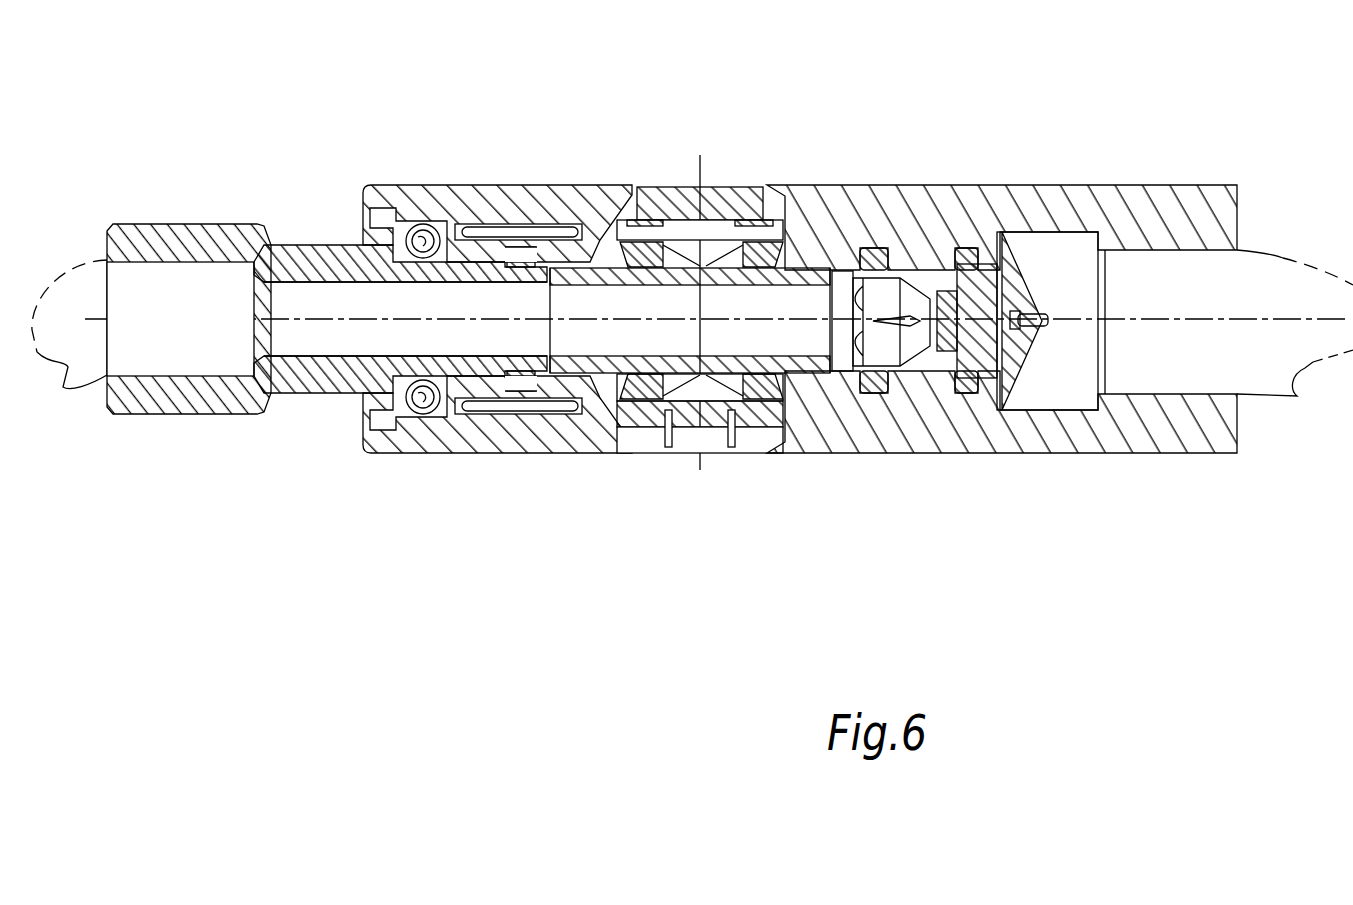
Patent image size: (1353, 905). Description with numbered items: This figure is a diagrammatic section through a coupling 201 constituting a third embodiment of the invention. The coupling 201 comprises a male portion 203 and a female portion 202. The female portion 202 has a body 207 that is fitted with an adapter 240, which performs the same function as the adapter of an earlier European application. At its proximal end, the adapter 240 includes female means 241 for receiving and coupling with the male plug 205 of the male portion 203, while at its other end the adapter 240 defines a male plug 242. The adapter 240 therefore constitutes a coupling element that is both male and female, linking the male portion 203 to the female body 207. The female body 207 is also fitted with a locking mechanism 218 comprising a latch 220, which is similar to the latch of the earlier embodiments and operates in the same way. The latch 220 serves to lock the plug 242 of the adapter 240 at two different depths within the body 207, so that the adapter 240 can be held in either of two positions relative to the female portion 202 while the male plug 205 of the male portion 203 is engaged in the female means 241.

The coupling 201 is at (327, 228).
The female portion 202 is at (375, 178).
The male portion 203 is at (203, 242).
The male plug 205 is at (513, 283).
The body 207 is at (950, 200).
The locking mechanism 218 is at (716, 165).
The latch 220 is at (753, 440).
The adapter 240 is at (453, 231).
The female means 241 is at (578, 246).
The male plug 242 is at (747, 273).